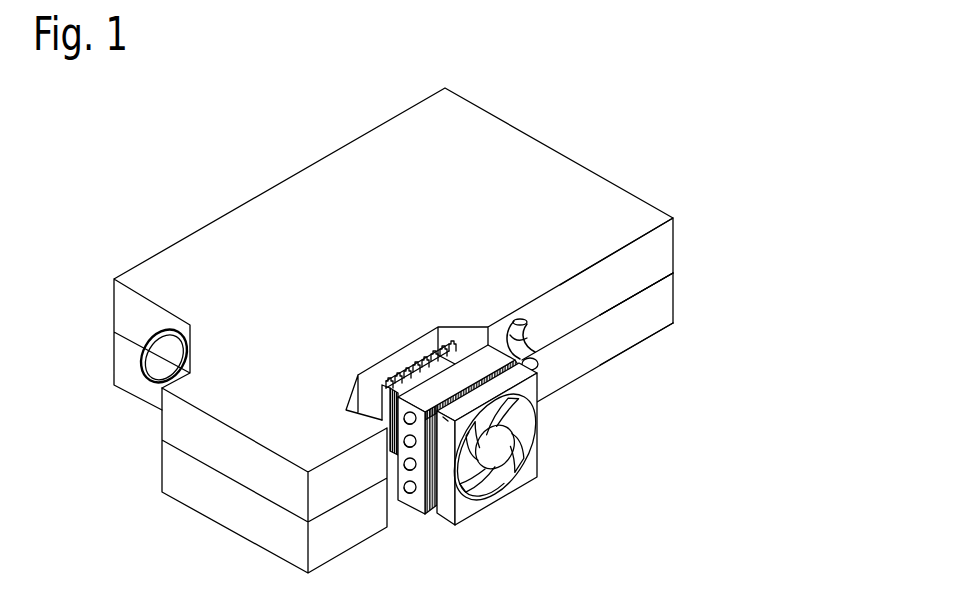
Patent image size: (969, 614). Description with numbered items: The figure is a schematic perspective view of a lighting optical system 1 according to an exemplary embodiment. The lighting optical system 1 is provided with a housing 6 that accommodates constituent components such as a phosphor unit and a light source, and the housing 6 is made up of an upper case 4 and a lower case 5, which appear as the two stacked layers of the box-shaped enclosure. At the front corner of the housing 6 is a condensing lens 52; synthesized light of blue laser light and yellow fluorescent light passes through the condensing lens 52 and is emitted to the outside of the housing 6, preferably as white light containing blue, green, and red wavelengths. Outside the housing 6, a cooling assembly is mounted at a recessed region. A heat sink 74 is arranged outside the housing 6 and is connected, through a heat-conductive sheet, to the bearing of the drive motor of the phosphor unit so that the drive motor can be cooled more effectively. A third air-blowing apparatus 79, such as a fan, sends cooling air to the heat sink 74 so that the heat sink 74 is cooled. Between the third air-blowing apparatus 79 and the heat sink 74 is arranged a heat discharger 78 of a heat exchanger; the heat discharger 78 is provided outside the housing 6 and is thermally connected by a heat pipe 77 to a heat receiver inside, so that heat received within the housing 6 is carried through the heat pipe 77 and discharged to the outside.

The lighting optical system 1 is at (155, 215).
The upper case 4 is at (665, 252).
The lower case 5 is at (665, 300).
The housing 6 is at (753, 235).
The condensing lens 52 is at (156, 361).
The heat sink 74 is at (388, 406).
The heat pipe 77 is at (528, 334).
The heat discharger 78 is at (470, 368).
The third air-blowing apparatus 79 is at (540, 466).